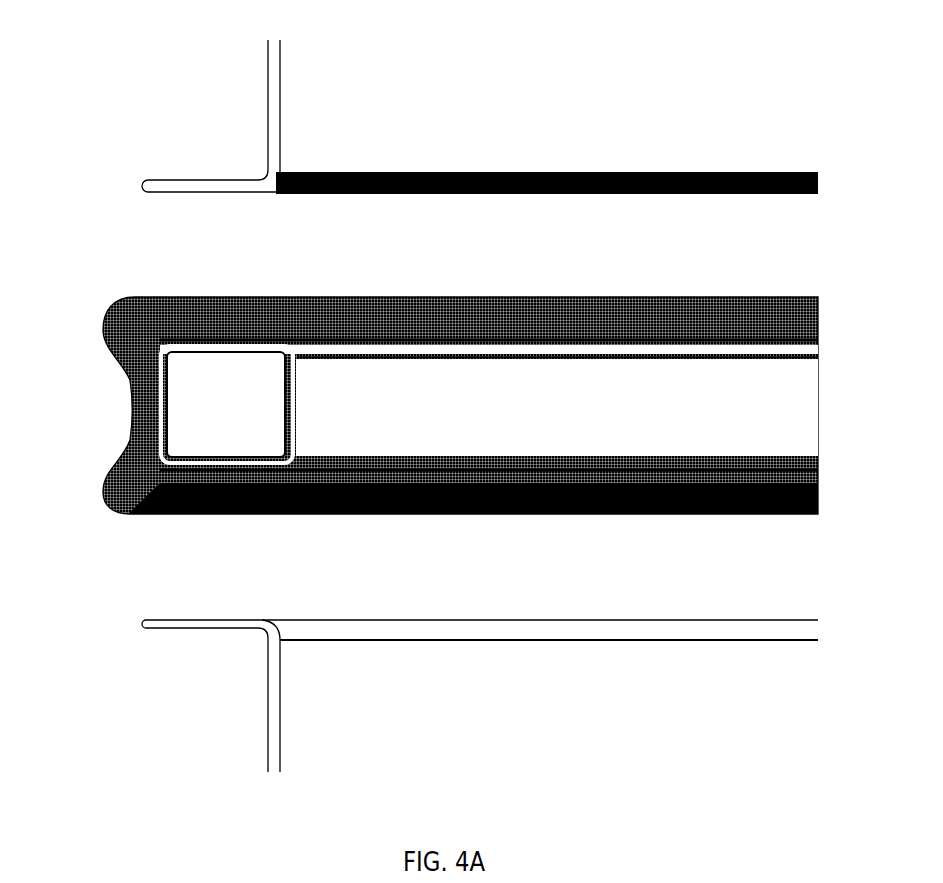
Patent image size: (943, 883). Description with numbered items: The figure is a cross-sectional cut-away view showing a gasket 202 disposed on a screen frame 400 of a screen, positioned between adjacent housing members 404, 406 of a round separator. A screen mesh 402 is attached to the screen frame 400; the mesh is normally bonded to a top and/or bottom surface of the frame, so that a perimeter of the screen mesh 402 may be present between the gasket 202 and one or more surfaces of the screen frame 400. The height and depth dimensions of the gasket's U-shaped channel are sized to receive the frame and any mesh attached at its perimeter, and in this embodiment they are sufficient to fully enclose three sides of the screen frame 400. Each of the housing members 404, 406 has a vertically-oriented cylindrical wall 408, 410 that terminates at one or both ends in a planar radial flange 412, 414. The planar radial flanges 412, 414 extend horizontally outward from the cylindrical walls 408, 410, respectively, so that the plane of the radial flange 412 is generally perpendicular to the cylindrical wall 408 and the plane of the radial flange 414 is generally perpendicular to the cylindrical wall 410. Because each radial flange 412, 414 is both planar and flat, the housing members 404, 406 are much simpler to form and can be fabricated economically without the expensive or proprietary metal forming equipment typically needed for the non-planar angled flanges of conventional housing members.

The gasket 202 is at (122, 298).
The screen frame 400 is at (567, 421).
The screen mesh 402 is at (245, 340).
The housing member 404 is at (577, 123).
The housing member 406 is at (563, 712).
The vertically-oriented cylindrical wall 408 is at (268, 92).
The vertically-oriented cylindrical wall 410 is at (268, 708).
The planar radial flange 412 is at (214, 180).
The planar radial flange 414 is at (218, 628).